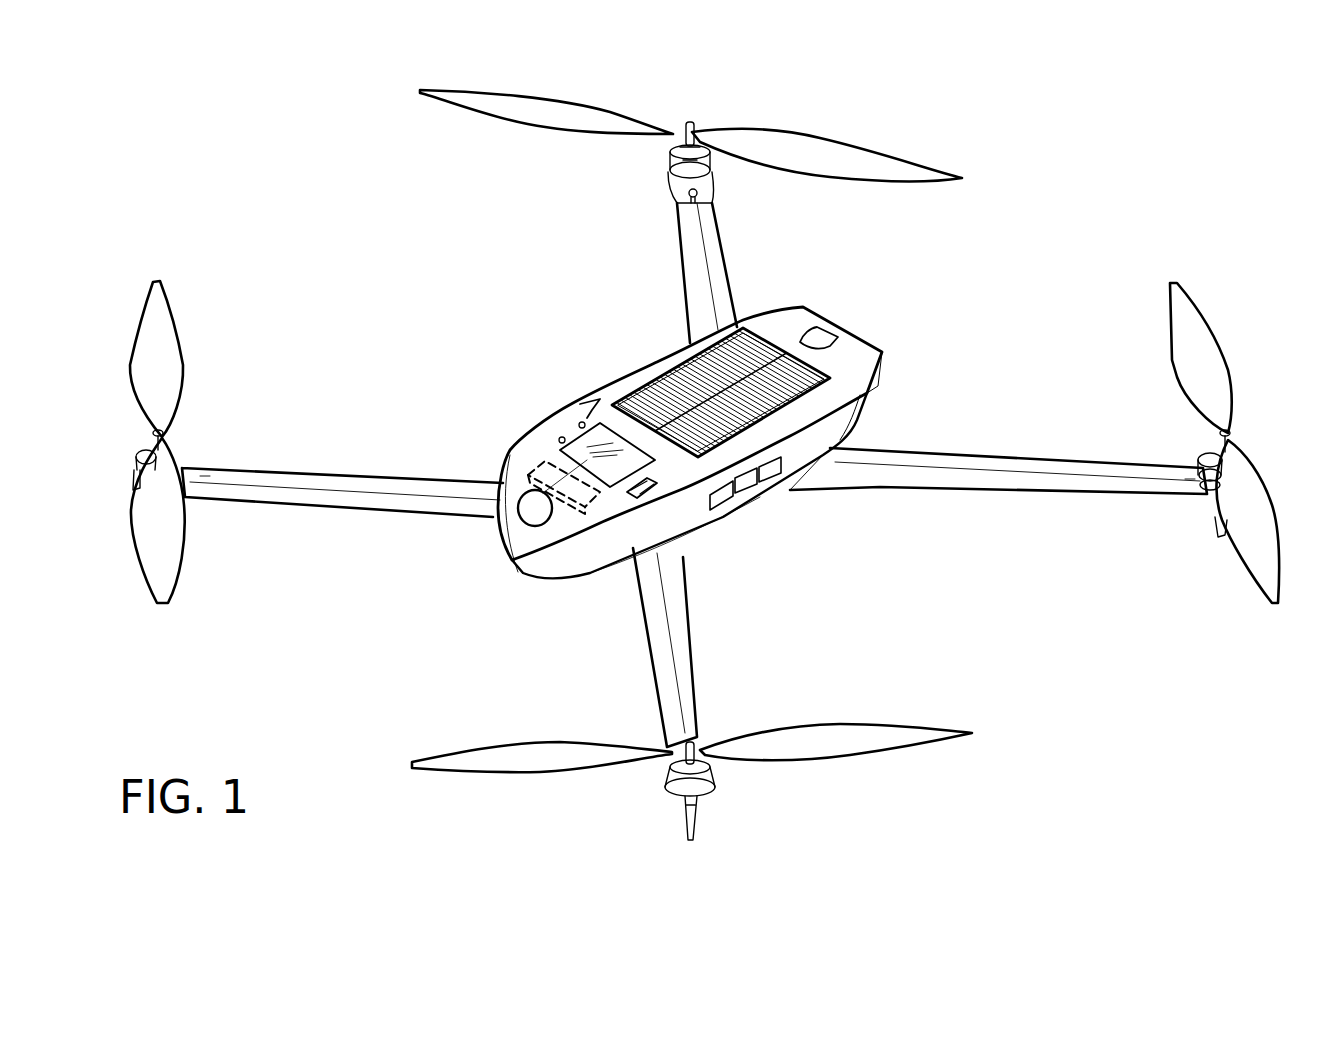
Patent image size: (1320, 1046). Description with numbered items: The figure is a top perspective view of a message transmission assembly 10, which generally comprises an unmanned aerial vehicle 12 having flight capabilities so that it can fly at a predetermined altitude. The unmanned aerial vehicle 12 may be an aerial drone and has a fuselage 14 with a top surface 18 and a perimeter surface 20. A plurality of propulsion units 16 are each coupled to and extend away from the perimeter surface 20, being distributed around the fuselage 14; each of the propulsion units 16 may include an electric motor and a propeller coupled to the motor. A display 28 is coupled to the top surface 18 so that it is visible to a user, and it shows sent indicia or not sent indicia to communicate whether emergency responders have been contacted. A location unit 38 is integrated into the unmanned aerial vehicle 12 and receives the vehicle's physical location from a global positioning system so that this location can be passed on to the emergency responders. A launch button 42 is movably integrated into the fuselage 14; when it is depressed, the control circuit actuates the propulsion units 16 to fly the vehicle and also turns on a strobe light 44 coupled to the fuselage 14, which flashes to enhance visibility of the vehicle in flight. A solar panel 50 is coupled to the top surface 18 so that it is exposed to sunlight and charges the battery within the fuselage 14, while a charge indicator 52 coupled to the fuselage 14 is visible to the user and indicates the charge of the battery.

The message transmission assembly 10 is at (332, 186).
The unmanned aerial vehicle 12 is at (934, 334).
The fuselage 14 is at (628, 372).
The propulsion units 16 is at (685, 267).
The top surface 18 is at (580, 405).
The perimeter surface 20 is at (521, 448).
The display 28 is at (657, 460).
The location unit 38 is at (620, 505).
The launch button 42 is at (833, 327).
The strobe light 44 is at (520, 505).
The solar panel 50 is at (756, 330).
The charge indicator 52 is at (793, 463).